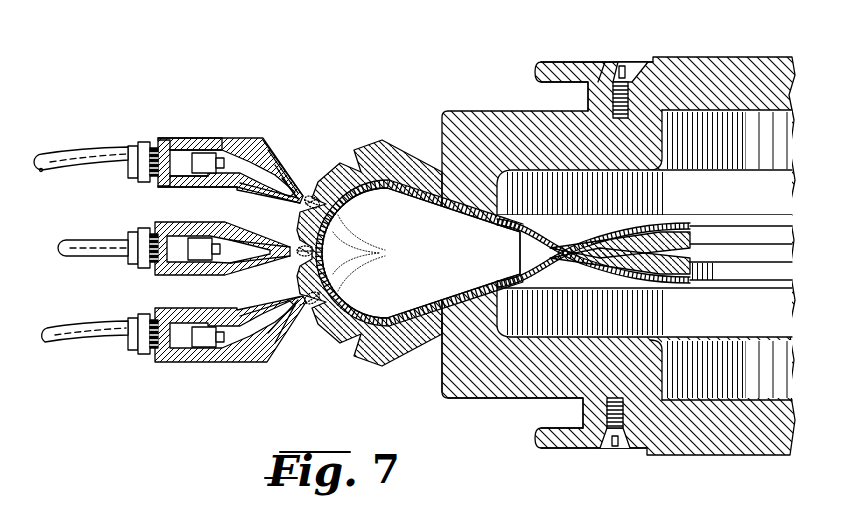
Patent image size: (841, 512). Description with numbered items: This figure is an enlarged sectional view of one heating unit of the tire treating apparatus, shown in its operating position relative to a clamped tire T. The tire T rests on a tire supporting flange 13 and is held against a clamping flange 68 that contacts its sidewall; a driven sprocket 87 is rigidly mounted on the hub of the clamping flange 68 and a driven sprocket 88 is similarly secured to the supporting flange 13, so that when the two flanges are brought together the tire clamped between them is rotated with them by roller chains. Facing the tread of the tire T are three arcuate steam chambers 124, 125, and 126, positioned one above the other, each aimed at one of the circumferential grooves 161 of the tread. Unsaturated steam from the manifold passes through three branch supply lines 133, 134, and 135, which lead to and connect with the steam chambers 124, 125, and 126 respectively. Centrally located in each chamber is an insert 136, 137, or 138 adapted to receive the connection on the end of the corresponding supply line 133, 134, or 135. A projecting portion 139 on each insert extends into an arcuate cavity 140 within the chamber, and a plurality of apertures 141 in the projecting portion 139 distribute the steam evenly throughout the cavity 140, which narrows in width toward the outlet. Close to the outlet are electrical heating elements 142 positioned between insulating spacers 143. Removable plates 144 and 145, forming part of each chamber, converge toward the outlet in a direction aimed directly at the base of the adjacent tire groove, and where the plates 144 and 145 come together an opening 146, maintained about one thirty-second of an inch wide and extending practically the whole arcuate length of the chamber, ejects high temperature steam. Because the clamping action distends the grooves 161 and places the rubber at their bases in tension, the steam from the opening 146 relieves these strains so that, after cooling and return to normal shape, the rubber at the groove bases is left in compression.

The tire supporting flange 13 is at (460, 374).
The clamping flange 68 is at (478, 111).
The driven sprocket 87 is at (576, 62).
The driven sprocket 88 is at (562, 448).
The tire T is at (412, 145).
The steam chamber 124 is at (194, 133).
The steam chamber 125 is at (185, 233).
The steam chamber 126 is at (182, 319).
The branch supply line 133 is at (58, 158).
The branch supply line 134 is at (68, 242).
The branch supply line 135 is at (58, 330).
The insert 136 is at (168, 140).
The insert 137 is at (165, 207).
The insert 138 is at (165, 293).
The projecting portion 139 is at (205, 138).
The arcuate cavity 140 is at (212, 137).
The apertures 141 is at (194, 151).
The electrical heating element 142 is at (282, 160).
The insulating spacer 143 is at (293, 165).
The removable plate 144 is at (258, 139).
The removable plate 145 is at (268, 190).
The opening 146 is at (305, 194).
The circumferential grooves 161 is at (310, 306).